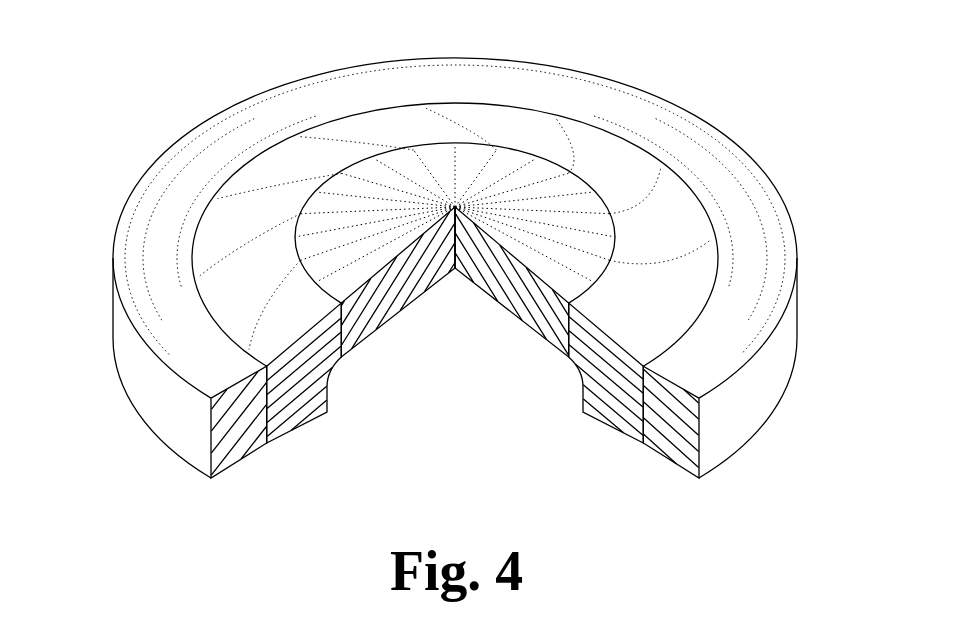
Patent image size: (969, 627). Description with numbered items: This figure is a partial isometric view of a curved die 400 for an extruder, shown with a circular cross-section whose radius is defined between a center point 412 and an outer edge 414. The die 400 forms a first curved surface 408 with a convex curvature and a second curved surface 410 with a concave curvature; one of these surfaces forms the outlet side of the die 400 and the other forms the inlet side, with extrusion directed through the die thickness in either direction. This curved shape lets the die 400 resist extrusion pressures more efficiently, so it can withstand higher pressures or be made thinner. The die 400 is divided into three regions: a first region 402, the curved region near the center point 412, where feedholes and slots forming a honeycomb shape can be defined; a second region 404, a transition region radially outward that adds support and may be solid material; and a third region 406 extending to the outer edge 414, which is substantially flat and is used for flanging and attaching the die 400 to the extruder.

The curved die 400 is at (78, 169).
The first region 402 is at (381, 339).
The second region 404 is at (612, 421).
The third region 406 is at (676, 446).
The first curved surface 408 is at (449, 173).
The second curved surface 410 is at (341, 372).
The center point 412 is at (453, 288).
The outer edge 414 is at (778, 432).